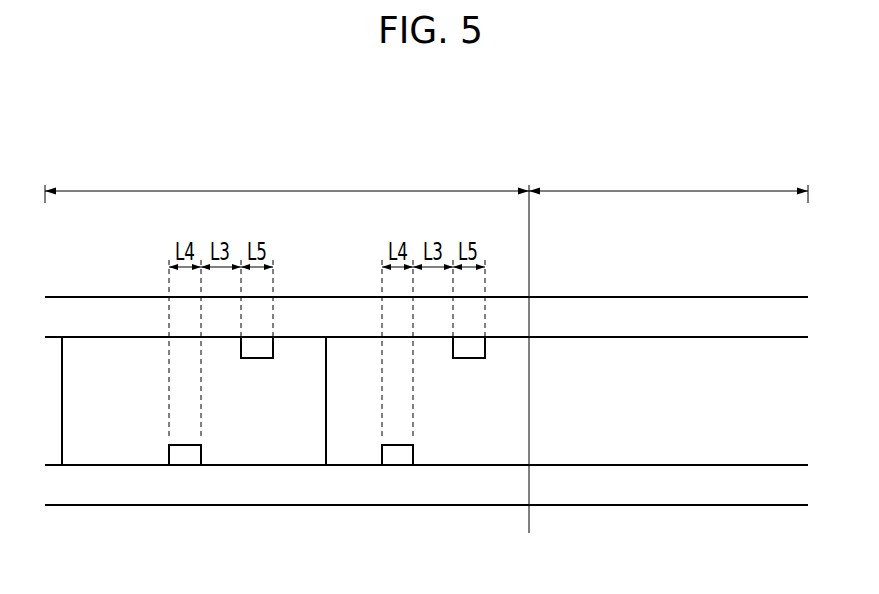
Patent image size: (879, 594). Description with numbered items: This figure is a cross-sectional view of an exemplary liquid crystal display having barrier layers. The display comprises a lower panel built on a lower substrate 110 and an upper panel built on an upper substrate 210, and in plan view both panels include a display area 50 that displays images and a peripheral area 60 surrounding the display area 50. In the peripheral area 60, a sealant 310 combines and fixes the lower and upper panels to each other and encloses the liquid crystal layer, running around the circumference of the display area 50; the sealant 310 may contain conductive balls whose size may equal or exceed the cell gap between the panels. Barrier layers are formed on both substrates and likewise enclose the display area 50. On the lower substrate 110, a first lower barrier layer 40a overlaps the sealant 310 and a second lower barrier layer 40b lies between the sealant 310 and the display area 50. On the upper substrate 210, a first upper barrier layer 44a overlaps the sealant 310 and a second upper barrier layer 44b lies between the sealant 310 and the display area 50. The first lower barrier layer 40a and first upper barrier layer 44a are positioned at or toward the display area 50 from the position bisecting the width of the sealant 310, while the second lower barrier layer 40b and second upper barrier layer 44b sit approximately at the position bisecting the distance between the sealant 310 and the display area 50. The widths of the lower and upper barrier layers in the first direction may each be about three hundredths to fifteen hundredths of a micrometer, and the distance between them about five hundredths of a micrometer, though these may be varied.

The peripheral area 60 is at (287, 182).
The display area 50 is at (668, 347).
The upper substrate 210 is at (97, 316).
The lower substrate 110 is at (325, 487).
The sealant 310 is at (108, 435).
The first lower barrier layer 40a is at (187, 455).
The first upper barrier layer 44a is at (260, 350).
The second lower barrier layer 40b is at (397, 455).
The second upper barrier layer 44b is at (469, 350).